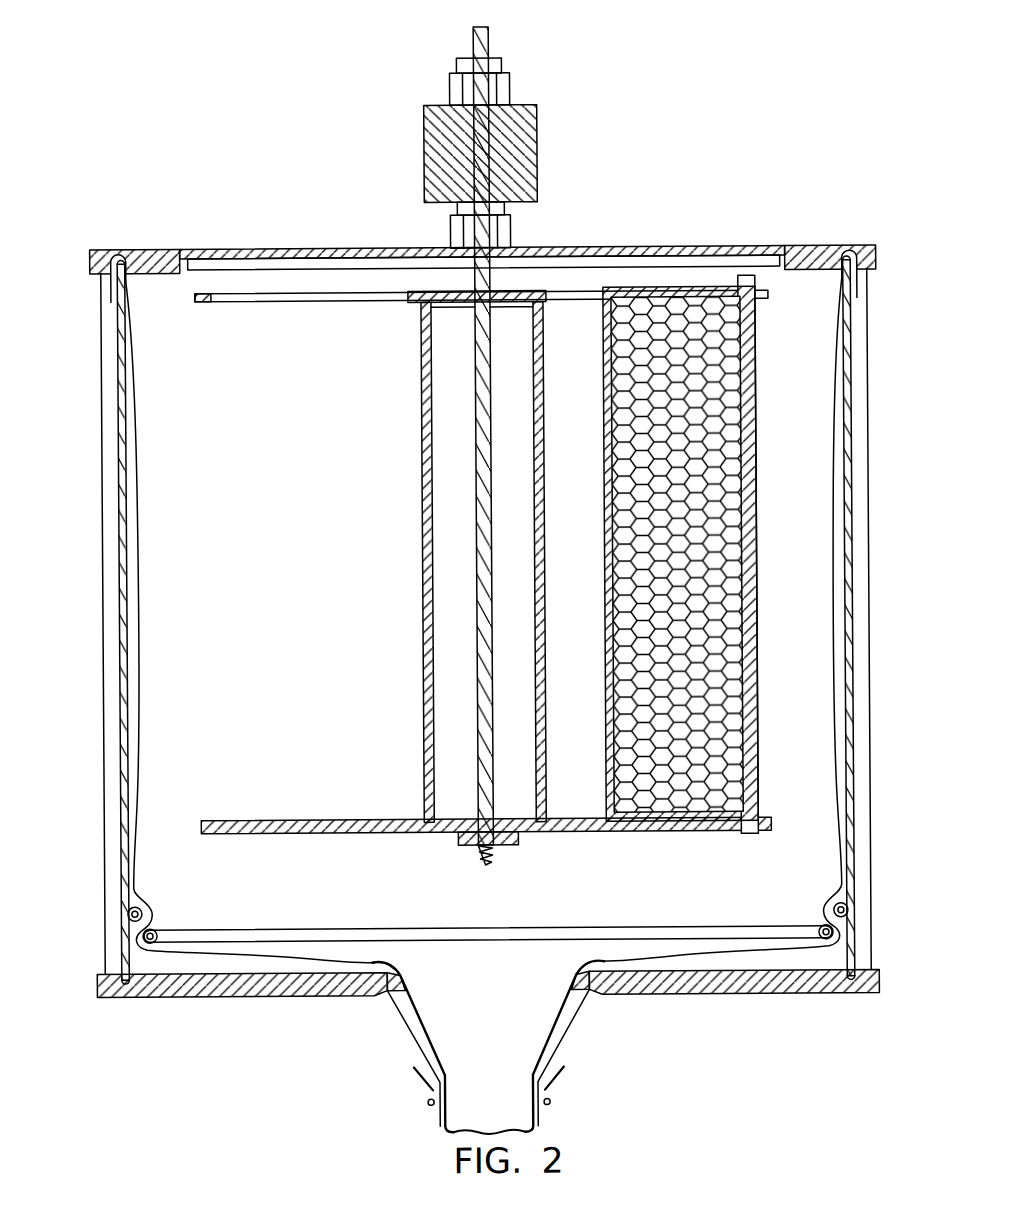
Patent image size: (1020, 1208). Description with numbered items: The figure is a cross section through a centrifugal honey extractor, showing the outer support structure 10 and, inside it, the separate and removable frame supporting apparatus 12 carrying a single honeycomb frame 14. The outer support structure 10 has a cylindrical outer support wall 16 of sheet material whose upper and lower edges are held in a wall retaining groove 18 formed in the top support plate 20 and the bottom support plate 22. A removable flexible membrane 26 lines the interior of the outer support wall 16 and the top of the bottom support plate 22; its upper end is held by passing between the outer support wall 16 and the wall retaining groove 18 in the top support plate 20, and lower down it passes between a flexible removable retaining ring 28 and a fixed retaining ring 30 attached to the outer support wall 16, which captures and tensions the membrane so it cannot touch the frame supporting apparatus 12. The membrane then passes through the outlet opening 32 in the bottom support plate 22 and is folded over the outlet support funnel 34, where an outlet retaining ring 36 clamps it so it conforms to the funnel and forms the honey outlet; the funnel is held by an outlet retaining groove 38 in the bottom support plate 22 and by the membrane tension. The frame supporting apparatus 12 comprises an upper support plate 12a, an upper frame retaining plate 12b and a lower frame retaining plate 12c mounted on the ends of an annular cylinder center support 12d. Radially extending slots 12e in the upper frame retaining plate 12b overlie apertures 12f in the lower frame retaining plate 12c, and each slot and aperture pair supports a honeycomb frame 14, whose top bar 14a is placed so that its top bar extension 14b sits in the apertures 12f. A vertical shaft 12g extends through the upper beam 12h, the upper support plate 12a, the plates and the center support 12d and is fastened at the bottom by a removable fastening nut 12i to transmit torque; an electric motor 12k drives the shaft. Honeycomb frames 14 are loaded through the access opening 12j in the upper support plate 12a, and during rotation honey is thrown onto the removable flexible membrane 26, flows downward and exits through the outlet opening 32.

The outer support structure 10 is at (487, 621).
The frame supporting apparatus 12 is at (477, 438).
The upper support plate 12a is at (640, 245).
The upper frame retaining plate 12b is at (198, 302).
The lower frame retaining plate 12c is at (290, 819).
The annular cylinder center support 12d is at (423, 730).
The slots 12e is at (585, 302).
The apertures 12f is at (215, 820).
The shaft 12g is at (497, 36).
The upper beam 12h is at (520, 88).
The fastening nut 12i is at (462, 843).
The access opening 12j is at (338, 246).
The electric motor 12k is at (522, 160).
The honeycomb frame 14 is at (723, 556).
The top bar 14a is at (742, 420).
The top bar extension 14b is at (758, 838).
The outer support wall 16 is at (117, 718).
The wall retaining groove 18 is at (108, 300).
The top support plate 20 is at (135, 246).
The bottom support plate 22 is at (240, 996).
The removable flexible membrane 26 is at (148, 650).
The removable retaining ring 28 is at (290, 928).
The fixed retaining ring 30 is at (135, 893).
The outlet opening 32 is at (485, 1020).
The outlet support funnel 34 is at (413, 1046).
The outlet retaining ring 36 is at (423, 1099).
The outlet retaining groove 38 is at (588, 1000).